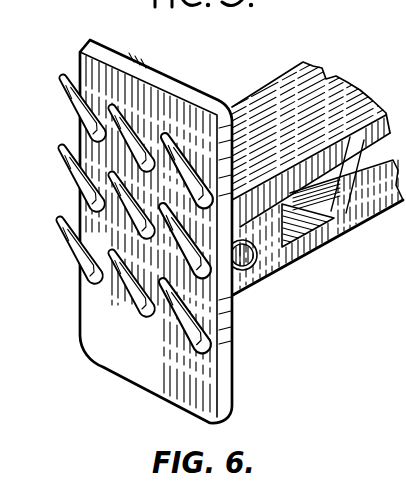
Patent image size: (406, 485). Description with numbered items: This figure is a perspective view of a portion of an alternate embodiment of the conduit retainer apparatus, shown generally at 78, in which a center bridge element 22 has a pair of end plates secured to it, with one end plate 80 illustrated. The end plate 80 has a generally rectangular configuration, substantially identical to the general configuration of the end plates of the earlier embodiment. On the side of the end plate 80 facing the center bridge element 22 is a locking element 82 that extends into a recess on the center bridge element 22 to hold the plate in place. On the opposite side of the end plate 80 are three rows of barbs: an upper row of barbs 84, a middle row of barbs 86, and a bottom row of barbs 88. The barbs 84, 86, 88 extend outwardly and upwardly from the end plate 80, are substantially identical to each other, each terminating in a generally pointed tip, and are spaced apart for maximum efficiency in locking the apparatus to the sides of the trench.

The center bridge element 22 is at (336, 90).
The plate assembly 78 is at (292, 37).
The end plate 80 is at (234, 345).
The locking element 82 is at (254, 266).
The upper row of barbs 84 is at (53, 70).
The middle row of barbs 86 is at (53, 140).
The bottom row of barbs 88 is at (53, 217).